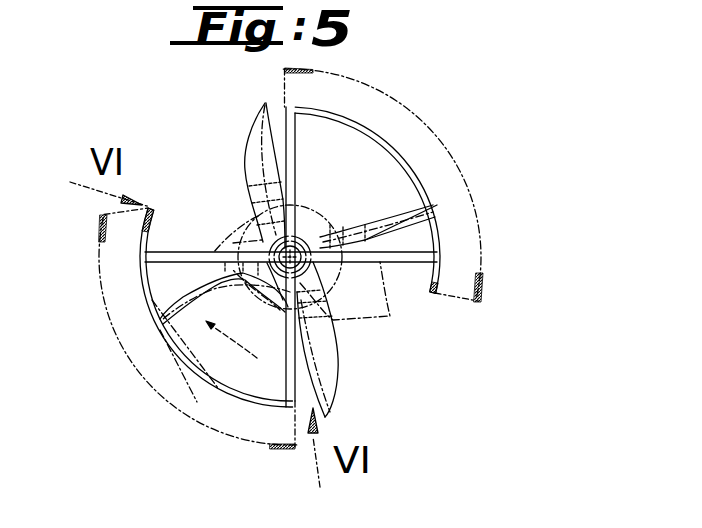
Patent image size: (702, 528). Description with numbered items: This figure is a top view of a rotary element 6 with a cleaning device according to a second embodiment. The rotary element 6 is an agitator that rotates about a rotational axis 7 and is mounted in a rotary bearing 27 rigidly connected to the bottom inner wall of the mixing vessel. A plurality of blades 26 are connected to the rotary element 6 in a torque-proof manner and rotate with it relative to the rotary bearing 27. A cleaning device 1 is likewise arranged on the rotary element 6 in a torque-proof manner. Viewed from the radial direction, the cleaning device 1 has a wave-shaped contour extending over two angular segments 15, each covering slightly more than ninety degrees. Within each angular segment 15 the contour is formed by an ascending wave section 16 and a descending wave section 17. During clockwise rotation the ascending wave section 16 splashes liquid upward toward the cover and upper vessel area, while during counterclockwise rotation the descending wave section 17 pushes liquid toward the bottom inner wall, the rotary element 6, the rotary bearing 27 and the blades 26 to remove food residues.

The cleaning device 1 is at (488, 136).
The rotary element 6 is at (198, 190).
The rotational axis 7 is at (328, 230).
The angular segments 15 is at (446, 146).
The ascending wave section 16 is at (330, 107).
The descending wave section 17 is at (426, 190).
The blades 26 is at (390, 316).
The rotary bearing 27 is at (250, 230).